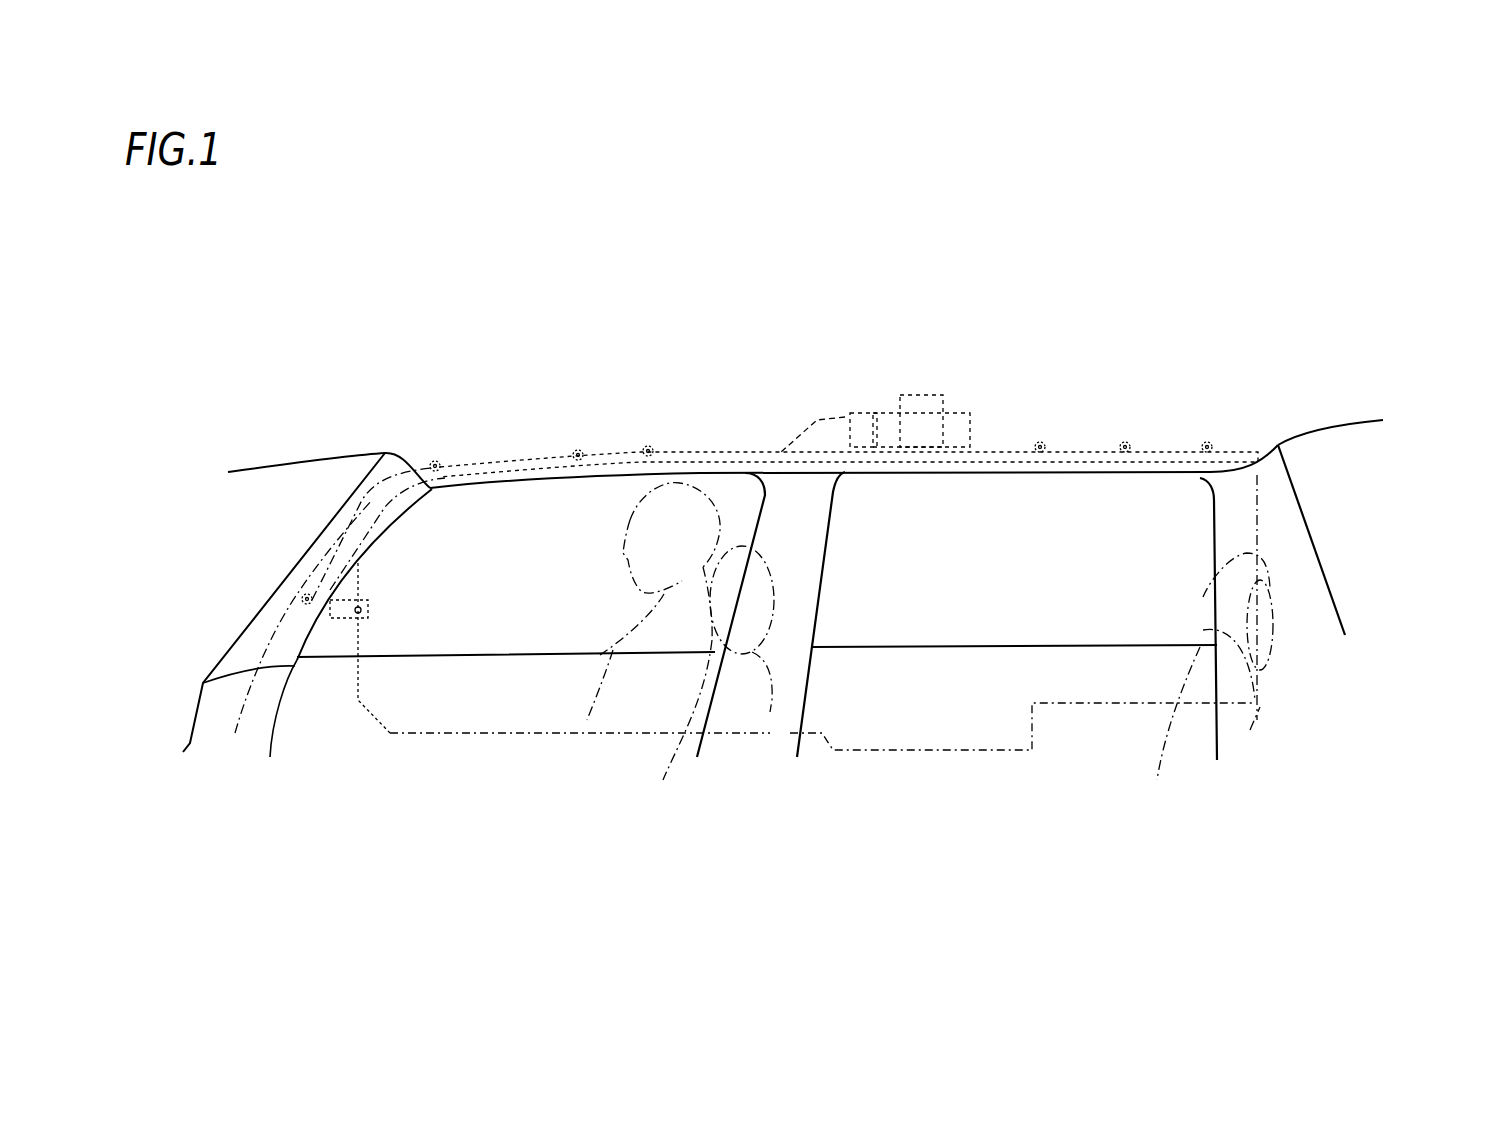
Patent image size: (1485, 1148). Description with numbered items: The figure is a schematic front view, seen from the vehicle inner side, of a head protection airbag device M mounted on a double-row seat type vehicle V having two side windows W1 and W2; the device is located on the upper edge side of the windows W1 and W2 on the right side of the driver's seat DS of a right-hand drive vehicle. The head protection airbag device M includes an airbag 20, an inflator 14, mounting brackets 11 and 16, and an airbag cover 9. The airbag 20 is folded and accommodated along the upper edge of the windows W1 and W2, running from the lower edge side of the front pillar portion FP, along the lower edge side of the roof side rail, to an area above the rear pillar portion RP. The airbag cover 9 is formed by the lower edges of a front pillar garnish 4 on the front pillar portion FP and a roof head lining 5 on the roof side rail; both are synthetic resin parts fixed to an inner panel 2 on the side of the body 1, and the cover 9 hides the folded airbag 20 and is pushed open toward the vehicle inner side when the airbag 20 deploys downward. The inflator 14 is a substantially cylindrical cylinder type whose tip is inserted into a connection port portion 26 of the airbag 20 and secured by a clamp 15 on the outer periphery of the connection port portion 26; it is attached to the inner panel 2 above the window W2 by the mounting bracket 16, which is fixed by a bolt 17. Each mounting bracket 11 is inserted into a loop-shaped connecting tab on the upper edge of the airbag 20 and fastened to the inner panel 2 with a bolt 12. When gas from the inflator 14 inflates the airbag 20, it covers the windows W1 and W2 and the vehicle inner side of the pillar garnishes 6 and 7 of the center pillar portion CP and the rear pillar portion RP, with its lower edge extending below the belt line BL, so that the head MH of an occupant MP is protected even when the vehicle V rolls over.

The body 1 is at (742, 536).
The inner panel 2 is at (742, 536).
The front pillar garnish 4 is at (307, 579).
The roof head lining 5 is at (1012, 445).
The pillar garnish 6 is at (819, 614).
The pillar garnish 7 is at (1319, 602).
The airbag cover 9 is at (818, 597).
The mounting bracket 11 is at (1148, 343).
The bolt 12 is at (648, 448).
The inflator 14 is at (962, 396).
The clamp 15 is at (857, 415).
The mounting bracket 16 is at (940, 478).
The bolt 17 is at (937, 393).
The airbag 20 is at (722, 450).
The connection port portion 26 is at (817, 420).
The vehicle V is at (1315, 375).
The head protection airbag device M is at (1032, 407).
The front pillar portion FP is at (247, 616).
The center pillar portion CP is at (823, 583).
The rear pillar portion RP is at (1318, 508).
The belt line BL is at (420, 660).
The window W1 is at (490, 640).
The window W2 is at (1007, 633).
The occupant MP is at (600, 620).
The head MH is at (712, 504).
The driver's seat DS is at (703, 615).